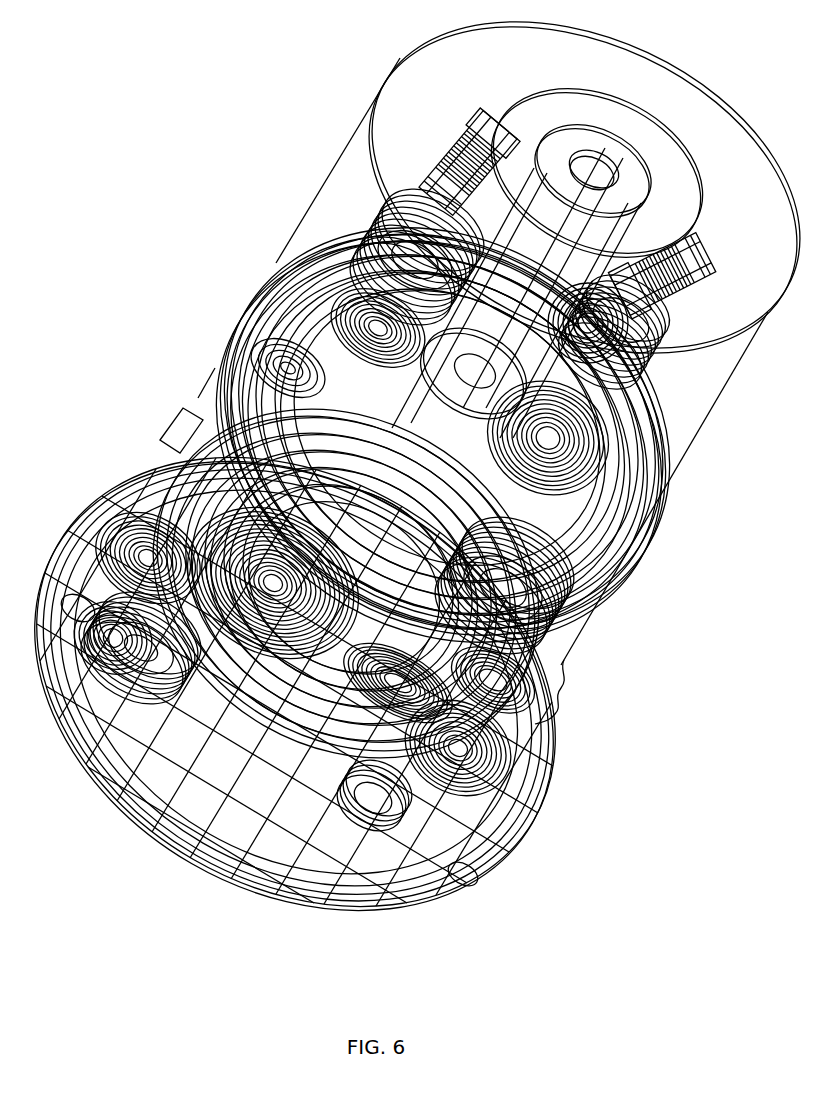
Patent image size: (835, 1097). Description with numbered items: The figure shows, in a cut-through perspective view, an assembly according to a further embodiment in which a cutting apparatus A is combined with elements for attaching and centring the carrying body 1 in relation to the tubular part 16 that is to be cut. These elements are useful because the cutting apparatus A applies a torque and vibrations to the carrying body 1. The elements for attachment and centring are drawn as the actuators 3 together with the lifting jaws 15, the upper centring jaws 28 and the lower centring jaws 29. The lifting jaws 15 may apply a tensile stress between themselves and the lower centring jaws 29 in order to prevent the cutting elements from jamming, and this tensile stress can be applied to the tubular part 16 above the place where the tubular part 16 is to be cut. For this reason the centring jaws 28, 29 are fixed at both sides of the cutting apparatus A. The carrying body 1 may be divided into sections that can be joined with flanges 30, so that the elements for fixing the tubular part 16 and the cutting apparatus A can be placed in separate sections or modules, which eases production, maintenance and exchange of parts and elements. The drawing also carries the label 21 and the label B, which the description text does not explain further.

The motor housing 1 is at (313, 175).
The fastening bolt 3 is at (430, 173).
The shaft 15 is at (487, 256).
The end plate hub 16 is at (518, 100).
The end cap 21 is at (283, 878).
The ring gear 28 is at (627, 427).
The upper bearing ring 29 is at (217, 315).
The stator assembly 30 is at (107, 503).
The section A is at (150, 433).
The section B is at (586, 643).